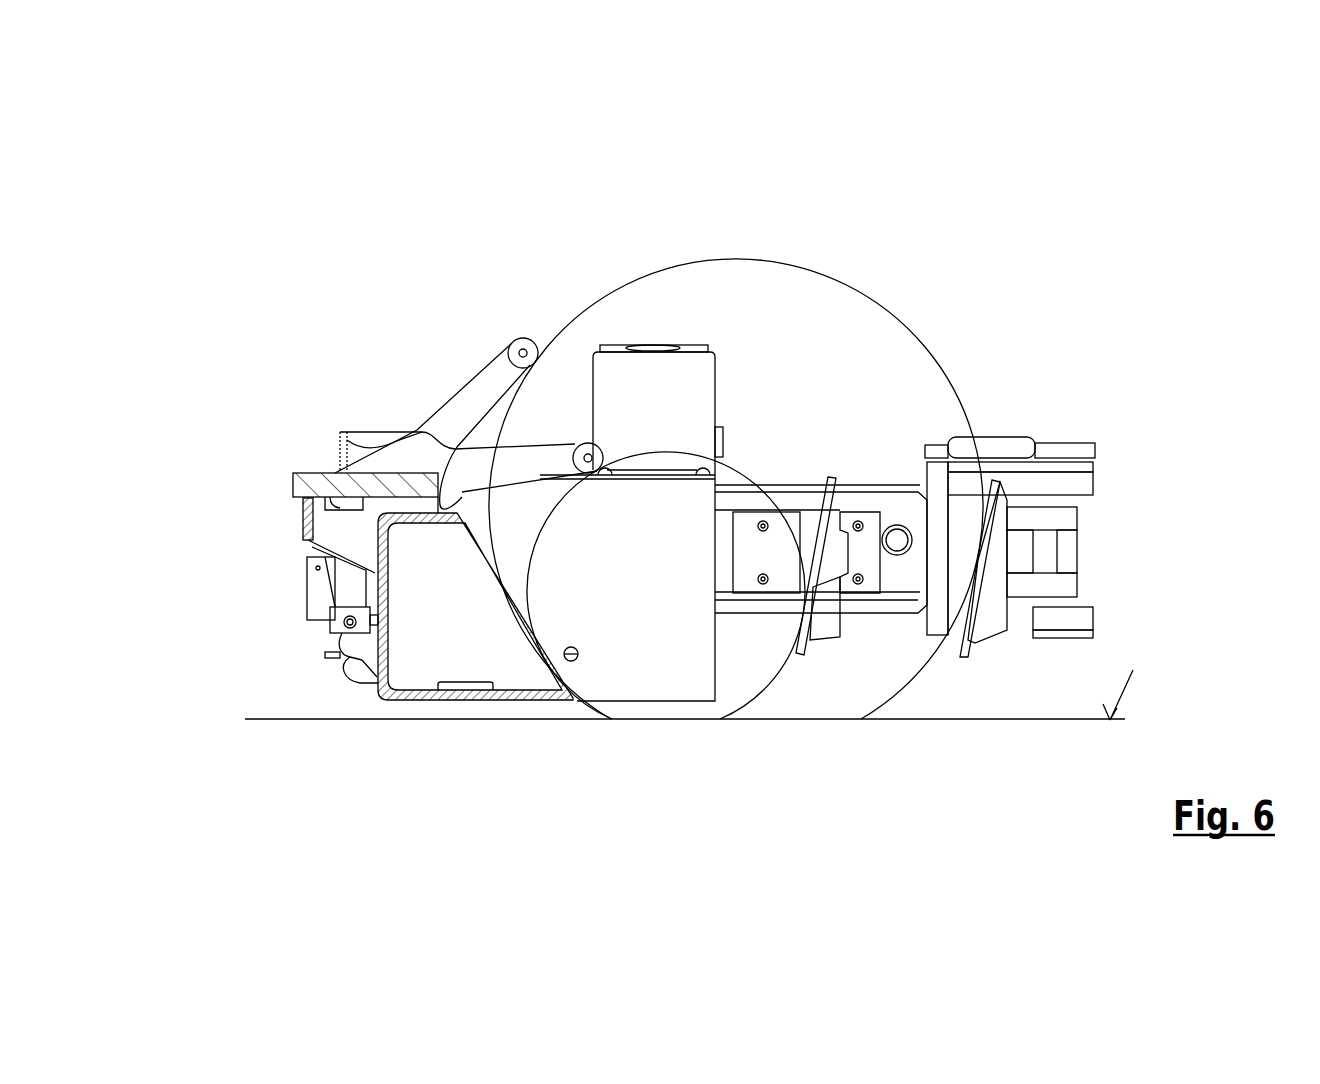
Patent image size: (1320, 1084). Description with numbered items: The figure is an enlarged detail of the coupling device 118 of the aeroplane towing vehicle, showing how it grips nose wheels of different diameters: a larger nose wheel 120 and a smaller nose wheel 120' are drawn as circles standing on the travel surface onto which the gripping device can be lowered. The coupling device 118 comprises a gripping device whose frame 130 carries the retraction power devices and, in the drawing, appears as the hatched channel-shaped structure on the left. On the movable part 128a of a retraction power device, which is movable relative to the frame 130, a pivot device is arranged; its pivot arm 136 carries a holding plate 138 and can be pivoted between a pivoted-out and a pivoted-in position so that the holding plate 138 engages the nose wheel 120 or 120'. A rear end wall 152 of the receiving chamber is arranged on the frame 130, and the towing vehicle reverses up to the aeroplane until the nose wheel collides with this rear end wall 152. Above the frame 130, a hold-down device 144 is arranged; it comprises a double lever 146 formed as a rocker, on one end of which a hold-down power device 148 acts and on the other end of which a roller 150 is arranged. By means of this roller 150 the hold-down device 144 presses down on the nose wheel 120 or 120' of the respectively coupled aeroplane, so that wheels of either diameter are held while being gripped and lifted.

The coupling device 118 is at (333, 253).
The nose wheel 120 is at (736, 440).
The nose wheel 120' is at (678, 628).
The movable part of retraction power device 128a is at (792, 502).
The frame 130 is at (392, 699).
The pivot arm 136 is at (1002, 553).
The holding plate 138 is at (990, 483).
The hold-down device 144 is at (241, 358).
The double lever 146 is at (472, 400).
The hold-down power device 148 is at (345, 580).
The roller 150 is at (522, 338).
The rear end wall 152 is at (500, 625).